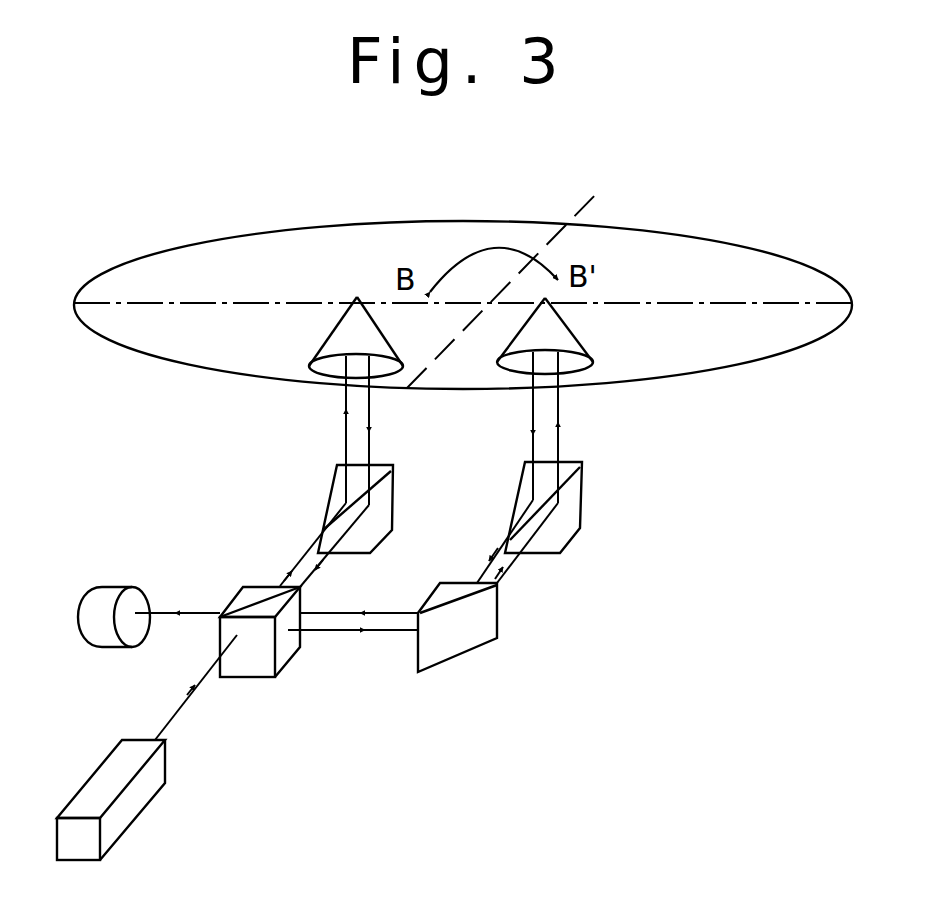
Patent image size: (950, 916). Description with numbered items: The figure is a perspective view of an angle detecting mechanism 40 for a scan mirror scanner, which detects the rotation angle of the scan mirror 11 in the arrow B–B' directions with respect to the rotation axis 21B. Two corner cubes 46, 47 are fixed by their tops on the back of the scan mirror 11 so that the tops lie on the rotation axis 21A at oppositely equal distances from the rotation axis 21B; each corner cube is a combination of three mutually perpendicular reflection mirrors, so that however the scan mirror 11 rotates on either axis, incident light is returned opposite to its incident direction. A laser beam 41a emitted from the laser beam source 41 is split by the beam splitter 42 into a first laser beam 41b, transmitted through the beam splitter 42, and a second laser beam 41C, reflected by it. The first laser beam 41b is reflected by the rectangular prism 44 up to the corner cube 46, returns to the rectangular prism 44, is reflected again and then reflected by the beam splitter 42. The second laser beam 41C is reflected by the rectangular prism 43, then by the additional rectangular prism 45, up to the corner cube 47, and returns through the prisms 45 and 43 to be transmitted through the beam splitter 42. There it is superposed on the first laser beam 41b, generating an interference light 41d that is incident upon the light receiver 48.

The scan mirror 11 is at (760, 266).
The rotation axis 21A is at (645, 298).
The rotation axis 21B is at (526, 270).
The angle detecting mechanism 40 is at (620, 492).
The laser beam source 41 is at (153, 777).
The laser beam 41a is at (183, 708).
The first laser beam 41b is at (307, 542).
The second laser beam 41C is at (310, 613).
The interference light 41d is at (195, 610).
The beam splitter 42 is at (247, 582).
The rectangular prism 43 is at (490, 602).
The rectangular prism 44 is at (393, 465).
The additional rectangular prism 45 is at (572, 460).
The corner cube 46 is at (337, 338).
The corner cube 47 is at (527, 337).
The light receiver 48 is at (88, 607).